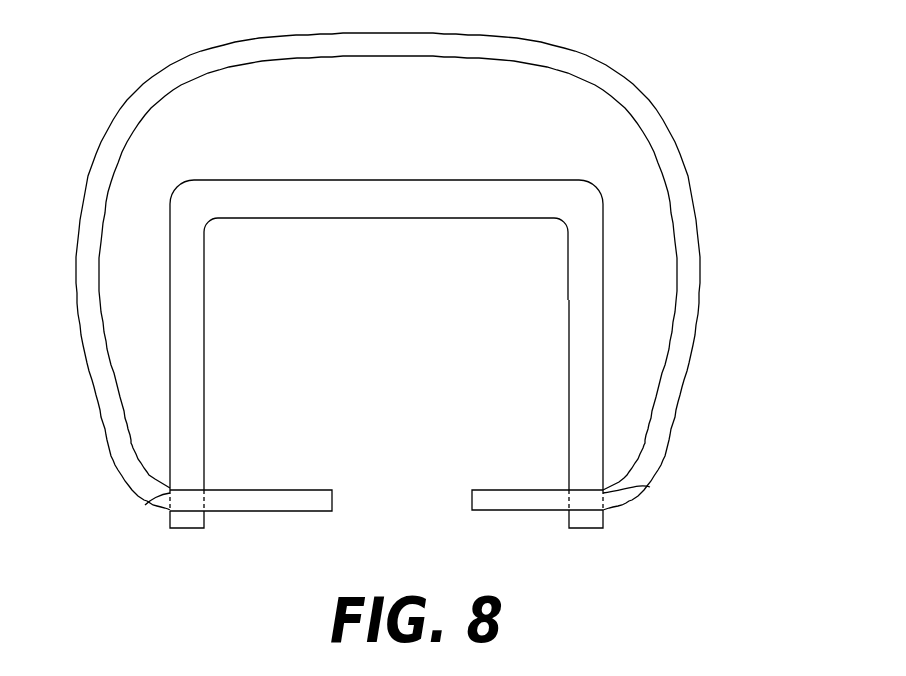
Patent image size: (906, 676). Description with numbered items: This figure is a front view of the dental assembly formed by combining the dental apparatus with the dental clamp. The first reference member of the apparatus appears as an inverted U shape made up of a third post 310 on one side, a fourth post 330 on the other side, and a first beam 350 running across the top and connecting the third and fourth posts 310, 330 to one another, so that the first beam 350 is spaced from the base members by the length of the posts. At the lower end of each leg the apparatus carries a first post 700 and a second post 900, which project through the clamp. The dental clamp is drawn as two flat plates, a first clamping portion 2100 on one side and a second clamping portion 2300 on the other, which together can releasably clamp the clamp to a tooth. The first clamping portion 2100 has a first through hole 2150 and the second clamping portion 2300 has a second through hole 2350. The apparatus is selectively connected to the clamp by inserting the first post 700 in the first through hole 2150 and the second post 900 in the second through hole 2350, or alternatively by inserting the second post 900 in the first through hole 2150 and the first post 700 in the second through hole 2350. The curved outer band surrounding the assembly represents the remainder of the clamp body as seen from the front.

The first beam 350 is at (378, 180).
The fourth post 330 is at (205, 337).
The third post 310 is at (568, 307).
The second post 900 is at (207, 514).
The first post 700 is at (606, 514).
The first clamping portion 2100 is at (317, 490).
The second clamping portion 2300 is at (485, 513).
The first through hole 2150 is at (145, 505).
The second through hole 2350 is at (650, 487).